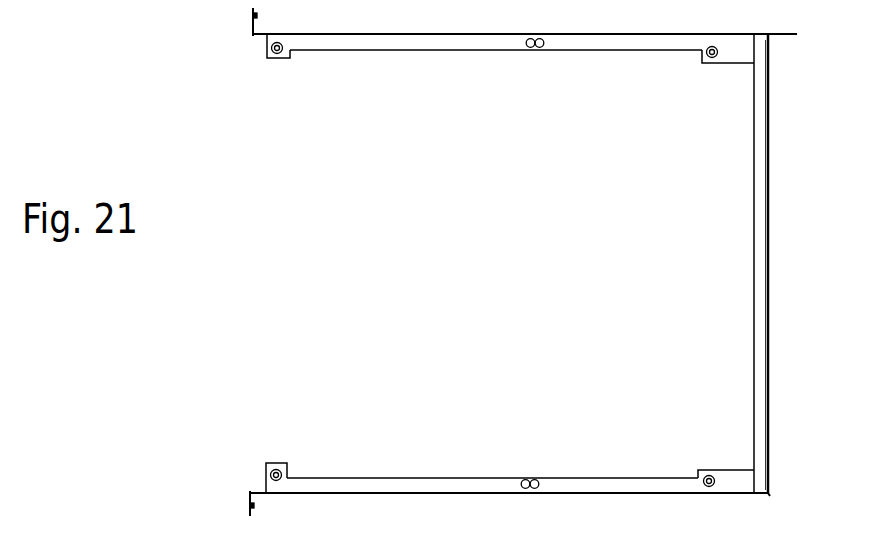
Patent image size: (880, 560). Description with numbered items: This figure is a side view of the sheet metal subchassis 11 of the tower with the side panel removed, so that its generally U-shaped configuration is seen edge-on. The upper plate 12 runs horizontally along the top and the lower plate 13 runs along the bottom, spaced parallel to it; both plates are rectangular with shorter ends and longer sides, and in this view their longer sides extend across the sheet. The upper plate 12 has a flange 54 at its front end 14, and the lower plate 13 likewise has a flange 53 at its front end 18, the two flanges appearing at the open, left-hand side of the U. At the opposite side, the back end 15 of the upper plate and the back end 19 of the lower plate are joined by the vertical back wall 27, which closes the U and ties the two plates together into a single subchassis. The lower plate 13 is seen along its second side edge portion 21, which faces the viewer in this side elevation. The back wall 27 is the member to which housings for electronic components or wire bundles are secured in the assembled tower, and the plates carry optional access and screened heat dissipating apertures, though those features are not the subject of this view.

The subchassis 11 is at (652, 341).
The upper plate 12 is at (465, 33).
The lower plate 13 is at (475, 494).
The front end 14 is at (252, 35).
The back end 15 is at (802, 37).
The front end 18 is at (250, 491).
The back end 19 is at (770, 496).
The second side edge portion 21 is at (748, 214).
The back wall 27 is at (760, 120).
The flange 53 is at (250, 507).
The flange 54 is at (251, 15).